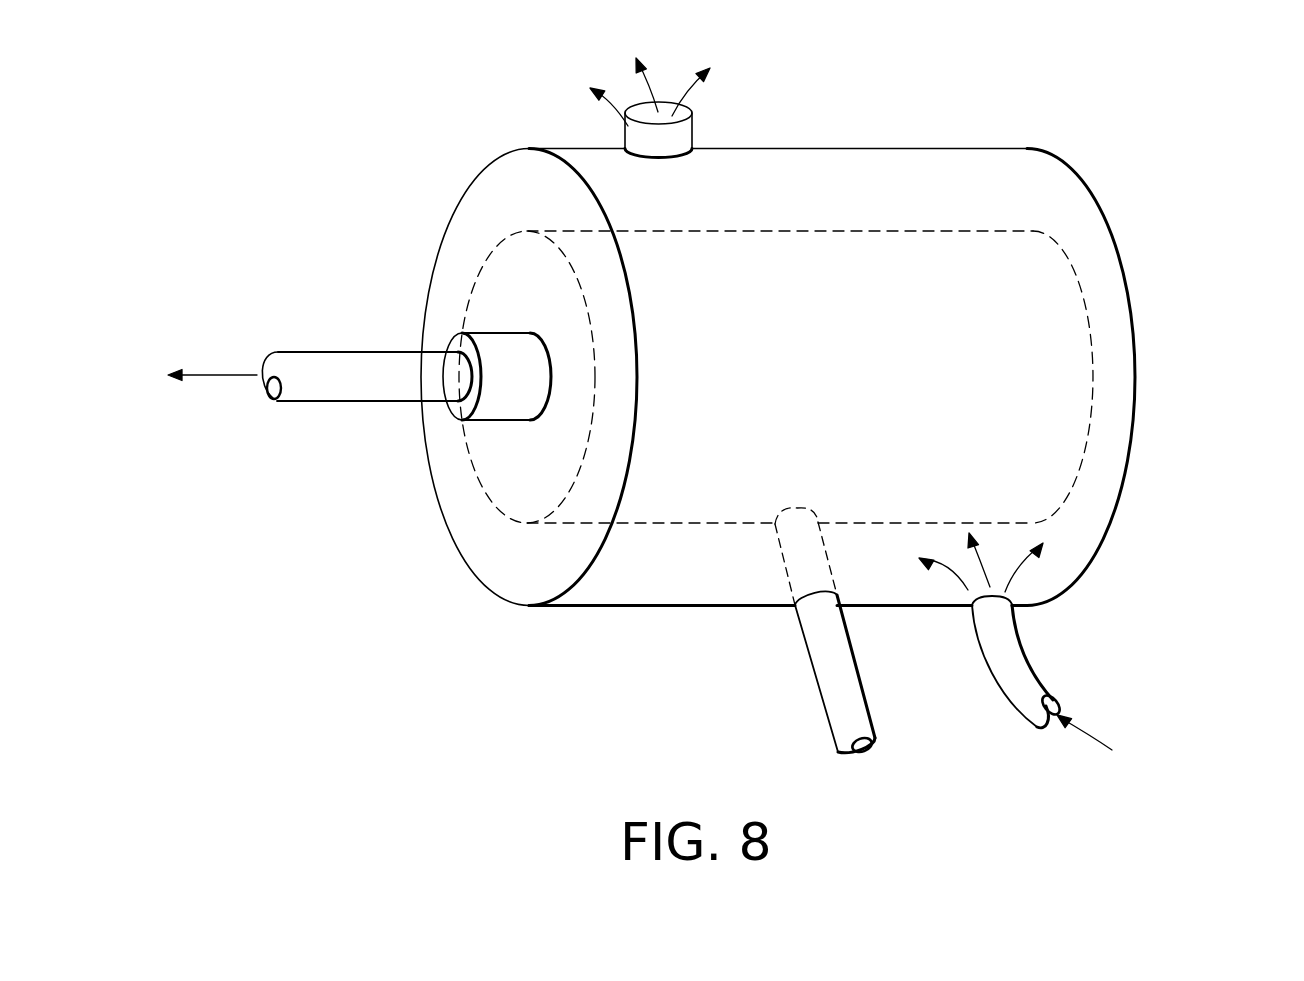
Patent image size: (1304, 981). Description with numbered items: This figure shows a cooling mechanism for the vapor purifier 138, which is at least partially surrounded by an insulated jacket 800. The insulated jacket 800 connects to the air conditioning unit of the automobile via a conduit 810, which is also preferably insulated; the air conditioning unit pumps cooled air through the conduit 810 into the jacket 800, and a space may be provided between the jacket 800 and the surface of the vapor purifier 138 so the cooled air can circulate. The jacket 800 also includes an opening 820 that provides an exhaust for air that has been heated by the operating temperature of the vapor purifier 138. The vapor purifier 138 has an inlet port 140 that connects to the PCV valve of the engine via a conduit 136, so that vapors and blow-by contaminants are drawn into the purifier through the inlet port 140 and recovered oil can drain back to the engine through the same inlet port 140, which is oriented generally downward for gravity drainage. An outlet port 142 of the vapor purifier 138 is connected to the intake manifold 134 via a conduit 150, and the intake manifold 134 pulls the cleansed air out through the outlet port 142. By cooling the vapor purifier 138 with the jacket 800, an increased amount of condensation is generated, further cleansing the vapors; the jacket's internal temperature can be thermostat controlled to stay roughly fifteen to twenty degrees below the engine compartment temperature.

The insulated jacket 800 is at (860, 148).
The vapor purifier 138 is at (962, 231).
The opening 820 is at (625, 128).
The outlet port 142 is at (497, 355).
The conduit 150 is at (342, 368).
The intake manifold 134 is at (208, 322).
The inlet port 140 is at (802, 552).
The conduit 136 is at (830, 688).
The conduit 810 is at (1022, 682).